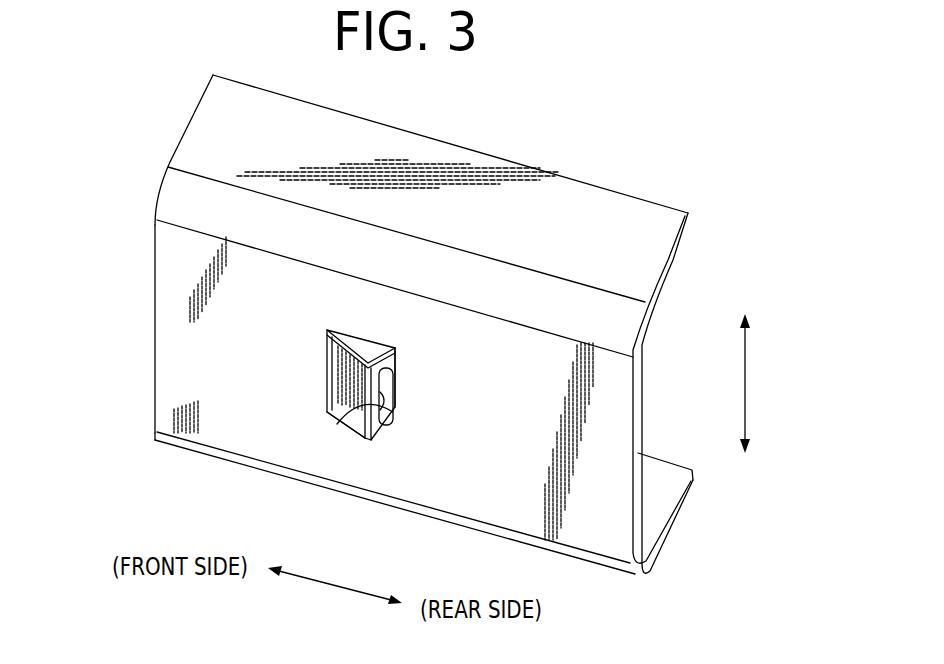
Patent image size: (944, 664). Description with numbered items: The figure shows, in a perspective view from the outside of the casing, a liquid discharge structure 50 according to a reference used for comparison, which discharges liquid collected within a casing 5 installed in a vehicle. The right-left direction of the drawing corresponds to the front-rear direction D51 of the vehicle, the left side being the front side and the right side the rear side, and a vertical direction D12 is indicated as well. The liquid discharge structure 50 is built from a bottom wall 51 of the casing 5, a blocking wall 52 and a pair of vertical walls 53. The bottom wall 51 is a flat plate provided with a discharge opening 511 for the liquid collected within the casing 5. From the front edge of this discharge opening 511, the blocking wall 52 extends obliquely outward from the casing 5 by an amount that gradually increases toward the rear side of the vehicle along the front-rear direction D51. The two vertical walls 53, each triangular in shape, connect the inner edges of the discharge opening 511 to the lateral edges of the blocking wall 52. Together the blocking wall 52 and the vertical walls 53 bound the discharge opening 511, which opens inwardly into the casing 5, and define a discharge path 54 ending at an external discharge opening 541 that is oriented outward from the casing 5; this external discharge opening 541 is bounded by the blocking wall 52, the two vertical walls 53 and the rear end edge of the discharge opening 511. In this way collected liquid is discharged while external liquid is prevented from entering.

The casing 5 is at (475, 132).
The liquid discharge structure 50 is at (140, 303).
The bottom wall 51 is at (603, 376).
The blocking wall 52 is at (327, 391).
The vertical walls 53 is at (368, 338).
The discharge path 54 is at (371, 372).
The discharge opening 511 is at (396, 372).
The external discharge opening 541 is at (347, 420).
The vertical direction D12 is at (748, 381).
The front-rear direction D51 is at (328, 585).